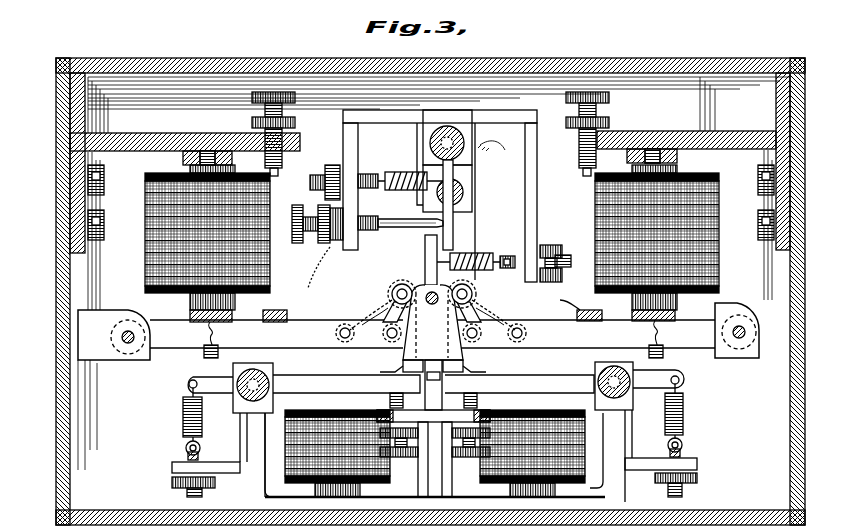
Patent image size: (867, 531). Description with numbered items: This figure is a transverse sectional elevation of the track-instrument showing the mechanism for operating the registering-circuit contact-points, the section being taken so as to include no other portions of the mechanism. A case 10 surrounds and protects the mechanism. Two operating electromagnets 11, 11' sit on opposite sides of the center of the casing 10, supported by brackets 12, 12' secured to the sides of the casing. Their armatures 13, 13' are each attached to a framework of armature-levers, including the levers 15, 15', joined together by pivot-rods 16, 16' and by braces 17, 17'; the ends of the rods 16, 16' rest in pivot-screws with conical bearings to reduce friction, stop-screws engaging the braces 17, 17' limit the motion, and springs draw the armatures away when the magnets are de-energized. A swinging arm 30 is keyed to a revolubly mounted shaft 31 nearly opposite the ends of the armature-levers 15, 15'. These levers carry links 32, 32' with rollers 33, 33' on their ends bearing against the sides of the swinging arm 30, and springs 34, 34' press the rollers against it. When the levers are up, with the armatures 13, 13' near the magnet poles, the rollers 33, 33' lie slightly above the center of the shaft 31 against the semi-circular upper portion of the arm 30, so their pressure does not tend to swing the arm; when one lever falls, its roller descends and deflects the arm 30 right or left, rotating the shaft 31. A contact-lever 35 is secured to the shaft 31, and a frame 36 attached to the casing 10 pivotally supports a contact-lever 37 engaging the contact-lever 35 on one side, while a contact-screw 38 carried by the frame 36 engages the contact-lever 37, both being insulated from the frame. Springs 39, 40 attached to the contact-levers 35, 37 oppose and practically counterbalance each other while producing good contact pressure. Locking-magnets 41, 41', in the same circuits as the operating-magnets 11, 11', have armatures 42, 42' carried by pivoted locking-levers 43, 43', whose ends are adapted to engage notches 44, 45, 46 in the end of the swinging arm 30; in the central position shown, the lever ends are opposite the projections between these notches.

The case 10 is at (76, 3).
The electromagnet 11 is at (671, 237).
The electromagnet 11' is at (194, 237).
The bracket 12 is at (671, 134).
The bracket 12' is at (185, 134).
The armature 13 is at (666, 331).
The armature 13' is at (192, 334).
The armature-lever 15 is at (592, 326).
The armature-lever 15' is at (268, 329).
The pivot-rod 16 is at (748, 330).
The pivot-rod 16' is at (114, 348).
The brace 17 is at (564, 309).
The brace 17' is at (313, 283).
The swinging arm 30 is at (433, 347).
The shaft 31 is at (430, 310).
The link 32 is at (493, 312).
The link 32' is at (370, 311).
The roller 33 is at (475, 301).
The roller 33' is at (399, 292).
The spring 34 is at (502, 309).
The spring 34' is at (371, 304).
The contact-lever 35 is at (425, 243).
The frame 36 is at (470, 112).
The contact-lever 37 is at (454, 223).
The contact-screw 38 is at (396, 214).
The spring 39 is at (484, 257).
The spring 40 is at (400, 170).
The locking-magnet 41 is at (544, 453).
The locking-magnet 41' is at (321, 453).
The armature 42 is at (626, 433).
The armature 42' is at (241, 437).
The locking-lever 43 is at (566, 432).
The locking-lever 43' is at (297, 430).
The notch 44 is at (472, 369).
The notch 45 is at (436, 364).
The notch 46 is at (395, 369).